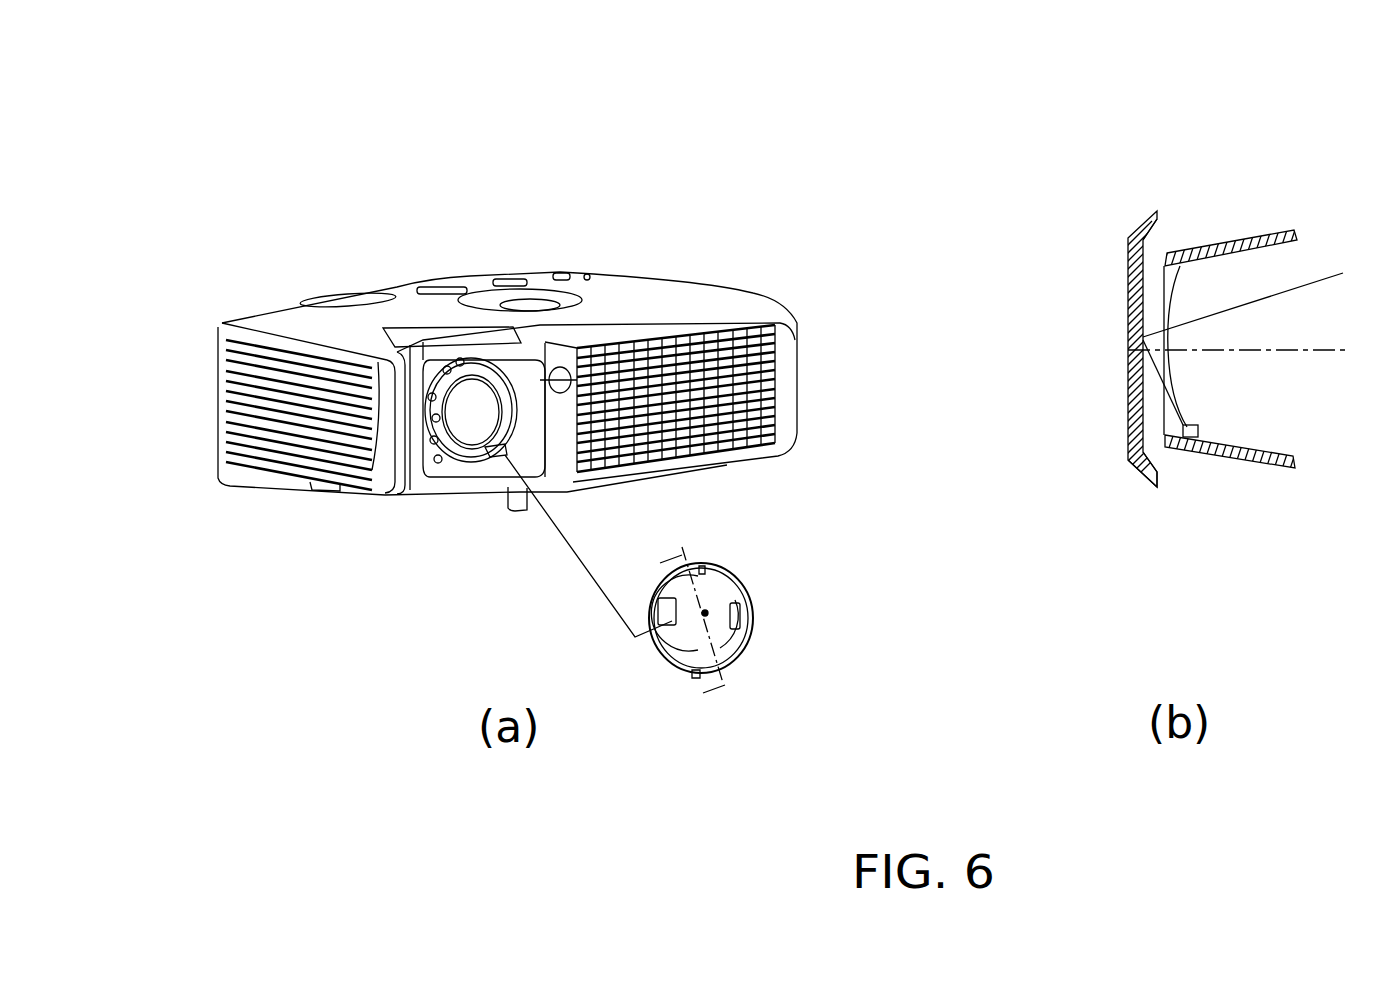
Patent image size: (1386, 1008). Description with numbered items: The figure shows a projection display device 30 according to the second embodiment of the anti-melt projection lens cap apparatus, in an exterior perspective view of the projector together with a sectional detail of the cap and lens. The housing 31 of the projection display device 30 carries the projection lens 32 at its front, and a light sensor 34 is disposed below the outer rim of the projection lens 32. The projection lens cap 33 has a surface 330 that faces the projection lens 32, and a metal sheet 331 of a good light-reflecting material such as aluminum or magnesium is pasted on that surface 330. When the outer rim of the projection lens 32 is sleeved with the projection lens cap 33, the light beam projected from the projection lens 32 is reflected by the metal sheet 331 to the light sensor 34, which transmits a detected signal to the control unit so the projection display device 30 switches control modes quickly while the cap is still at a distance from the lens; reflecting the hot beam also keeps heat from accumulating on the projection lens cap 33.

The projection display device 30 is at (300, 147).
The housing 31 is at (625, 285).
The projection lens 32 is at (437, 455).
The projection lens cap 33 is at (703, 566).
The metal sheet 331 is at (720, 638).
The surface 330 is at (1133, 440).
The light sensor 34 is at (493, 452).